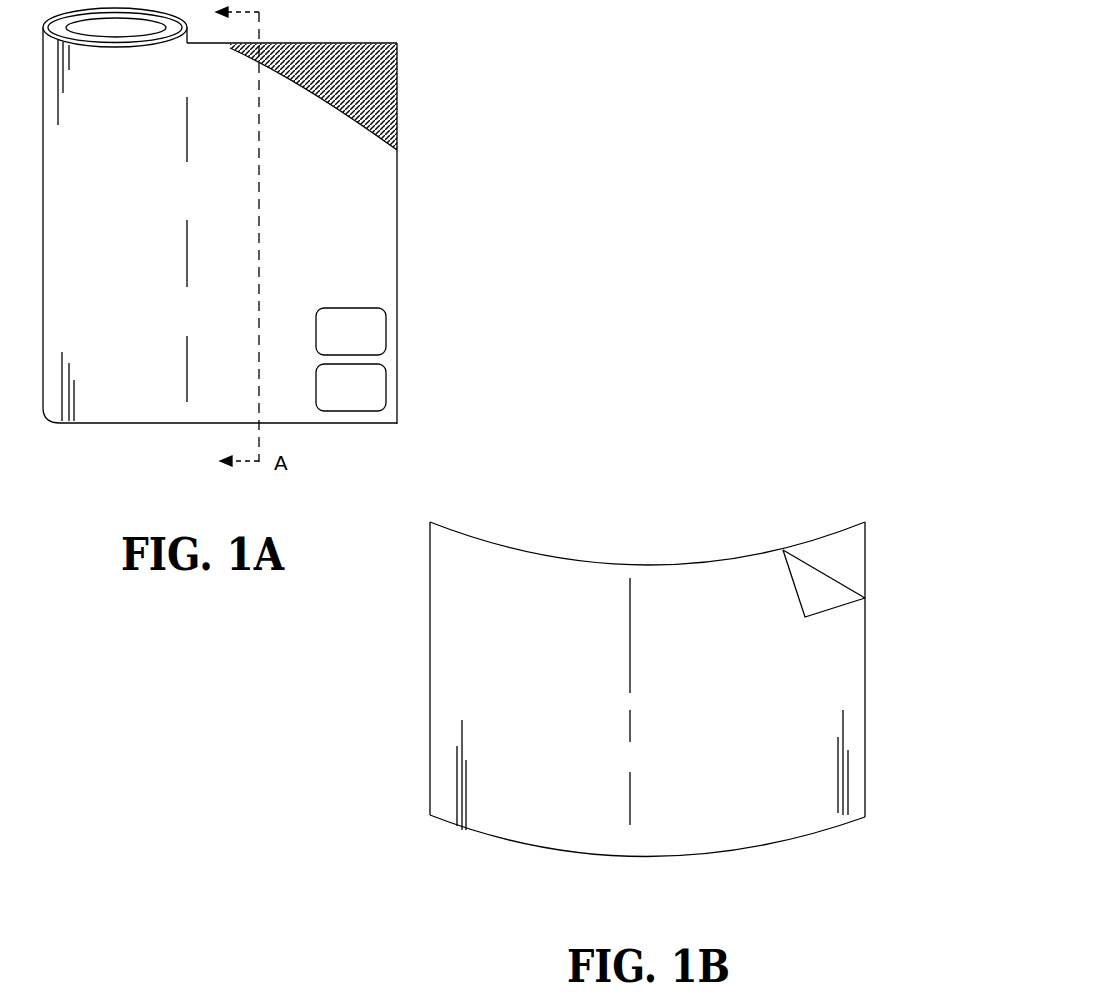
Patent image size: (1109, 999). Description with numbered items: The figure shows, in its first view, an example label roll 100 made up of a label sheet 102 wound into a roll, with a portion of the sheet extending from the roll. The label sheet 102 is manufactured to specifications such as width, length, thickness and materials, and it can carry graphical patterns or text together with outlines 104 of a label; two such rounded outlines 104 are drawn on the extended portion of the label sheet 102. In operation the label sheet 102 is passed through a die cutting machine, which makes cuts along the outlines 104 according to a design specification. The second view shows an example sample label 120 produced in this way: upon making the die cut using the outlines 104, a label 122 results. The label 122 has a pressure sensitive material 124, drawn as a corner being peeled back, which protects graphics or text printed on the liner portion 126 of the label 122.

In FIG. 1A, the label roll 100 is at (549, 45).
In FIG. 1A, the label sheet 102 is at (372, 267).
In FIG. 1A, the outlines 104 is at (385, 333).
In FIG. 1B, the sample label 120 is at (743, 469).
In FIG. 1B, the label 122 is at (585, 558).
In FIG. 1B, the pressure sensitive material 124 is at (797, 573).
In FIG. 1B, the liner portion 126 is at (855, 558).